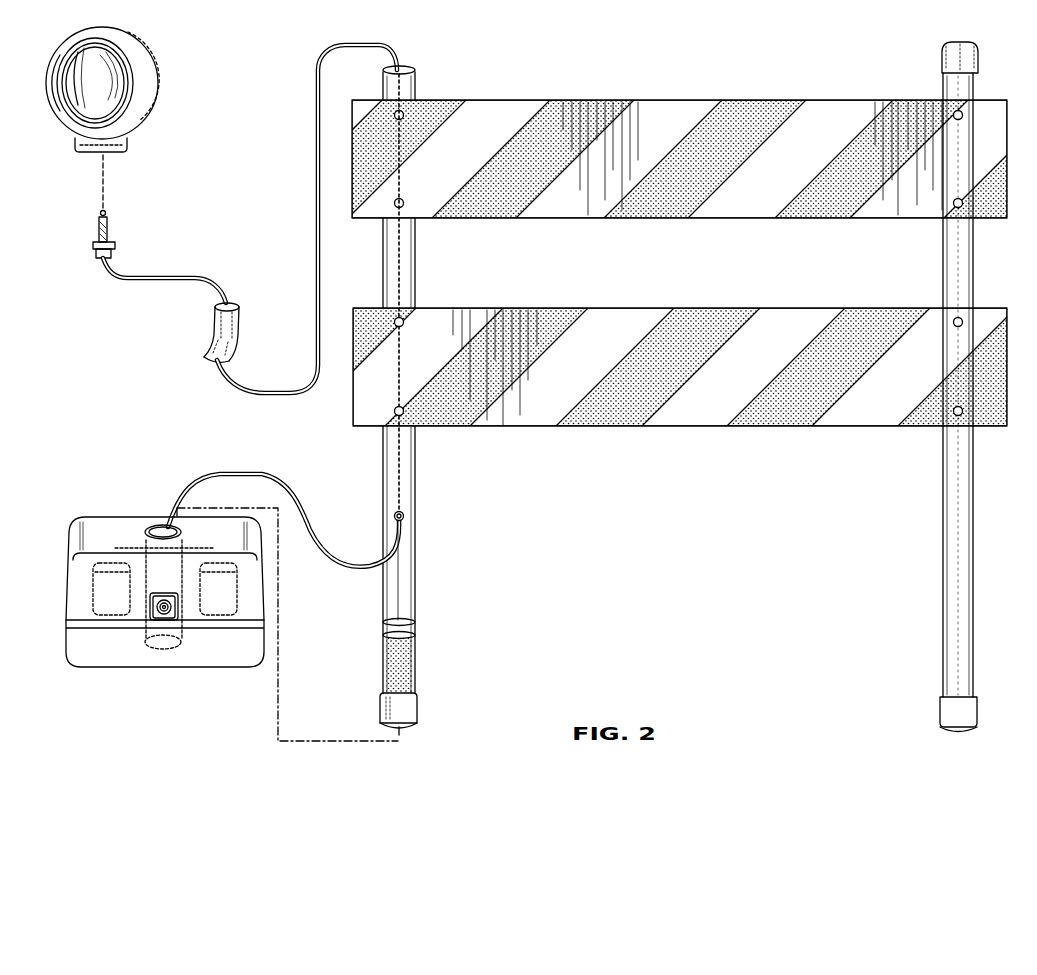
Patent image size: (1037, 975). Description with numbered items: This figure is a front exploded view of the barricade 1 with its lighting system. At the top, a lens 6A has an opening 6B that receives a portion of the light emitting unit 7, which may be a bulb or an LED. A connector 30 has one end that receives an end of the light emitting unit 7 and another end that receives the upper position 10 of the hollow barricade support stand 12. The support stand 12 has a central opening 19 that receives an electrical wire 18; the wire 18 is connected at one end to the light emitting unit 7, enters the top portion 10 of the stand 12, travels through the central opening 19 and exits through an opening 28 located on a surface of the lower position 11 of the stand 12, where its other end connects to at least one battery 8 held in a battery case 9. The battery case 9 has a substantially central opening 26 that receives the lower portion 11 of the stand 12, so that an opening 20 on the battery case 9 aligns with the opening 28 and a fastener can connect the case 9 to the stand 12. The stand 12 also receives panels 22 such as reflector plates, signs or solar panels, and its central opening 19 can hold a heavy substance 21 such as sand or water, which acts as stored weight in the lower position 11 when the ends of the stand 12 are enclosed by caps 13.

The barricade 1 is at (645, 59).
The lens 6A is at (152, 80).
The opening 6B is at (128, 142).
The light emitting unit 7 is at (115, 245).
The battery 8 is at (112, 600).
The battery case 9 is at (105, 517).
The upper position 10 is at (415, 78).
The lower position 11 is at (415, 535).
The barricade support stand 12 is at (383, 263).
The cap 13 is at (410, 705).
The electrical wire 18 is at (408, 233).
The central opening 19 is at (384, 70).
The opening 20 is at (170, 620).
The heavy substance 21 is at (413, 648).
The panel 22 is at (507, 118).
The central opening 26 is at (160, 530).
The opening 28 is at (396, 515).
The connector 30 is at (242, 313).